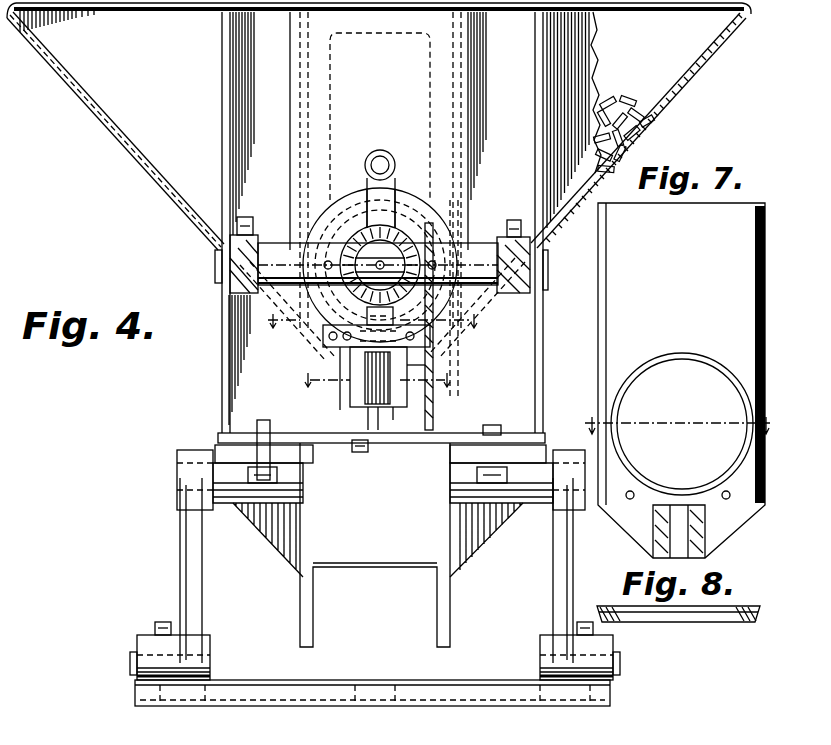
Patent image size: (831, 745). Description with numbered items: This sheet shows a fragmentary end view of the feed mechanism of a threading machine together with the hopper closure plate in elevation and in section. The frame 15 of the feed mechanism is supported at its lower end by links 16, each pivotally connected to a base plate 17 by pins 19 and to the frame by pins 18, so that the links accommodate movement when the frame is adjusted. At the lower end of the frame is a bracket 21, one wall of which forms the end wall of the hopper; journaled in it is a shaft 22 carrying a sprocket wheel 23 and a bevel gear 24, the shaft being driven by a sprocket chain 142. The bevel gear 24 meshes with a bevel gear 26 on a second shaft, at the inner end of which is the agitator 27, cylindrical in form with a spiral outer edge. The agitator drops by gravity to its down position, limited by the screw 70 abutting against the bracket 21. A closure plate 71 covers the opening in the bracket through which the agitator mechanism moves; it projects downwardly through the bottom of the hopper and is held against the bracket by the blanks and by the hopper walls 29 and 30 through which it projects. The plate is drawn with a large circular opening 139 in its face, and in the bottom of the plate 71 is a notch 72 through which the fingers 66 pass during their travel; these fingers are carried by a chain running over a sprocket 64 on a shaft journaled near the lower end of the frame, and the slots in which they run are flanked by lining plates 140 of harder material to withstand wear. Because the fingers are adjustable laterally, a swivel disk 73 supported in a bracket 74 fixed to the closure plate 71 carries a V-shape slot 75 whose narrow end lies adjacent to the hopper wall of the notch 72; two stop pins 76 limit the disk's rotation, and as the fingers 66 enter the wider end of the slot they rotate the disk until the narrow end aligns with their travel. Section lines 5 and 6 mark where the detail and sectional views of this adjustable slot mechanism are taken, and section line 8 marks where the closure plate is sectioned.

In FIG. 4, the hopper wall 30 is at (73, 83).
In FIG. 4, the bracket 21 is at (140, 115).
In FIG. 4, the screw 70 is at (386, 152).
In FIG. 4, the agitator 27 is at (352, 200).
In FIG. 4, the bevel gear 26 is at (414, 200).
In FIG. 4, the bevel gear 24 is at (337, 233).
In FIG. 4, the sprocket wheel 23 is at (433, 220).
In FIG. 4, the hopper wall 29 is at (667, 103).
In FIG. 4, the shaft 22 is at (213, 263).
In FIG. 4, the section line 5- 5 is at (372, 320).
In FIG. 4, the bracket 74 is at (323, 342).
In FIG. 4, the stop pins 76 is at (340, 356).
In FIG. 4, the V-shape slot 75 is at (432, 367).
In FIG. 4, the section line 6- 6 is at (378, 380).
In FIG. 4, the swivel disk 73 is at (340, 401).
In FIG. 4, the lining plates 140 is at (373, 416).
In FIG. 4, the fingers 66 is at (409, 412).
In FIG. 4, the closure plate 71 is at (436, 405).
In FIG. 7, the closure plate 71 is at (681, 380).
In FIG. 8, the closure plate 71 is at (745, 624).
In FIG. 4, the sprocket chain 142 is at (462, 414).
In FIG. 4, the sprocket 64 is at (354, 453).
In FIG. 4, the pins 18 is at (169, 477).
In FIG. 4, the links 16 is at (186, 533).
In FIG. 4, the frame 15 is at (389, 557).
In FIG. 4, the base plate 17 is at (320, 692).
In FIG. 4, the pins 19 is at (134, 660).
In FIG. 7, the section line 8- 8 is at (673, 424).
In FIG. 7, the opening 139 is at (695, 358).
In FIG. 7, the notch 72 is at (688, 525).